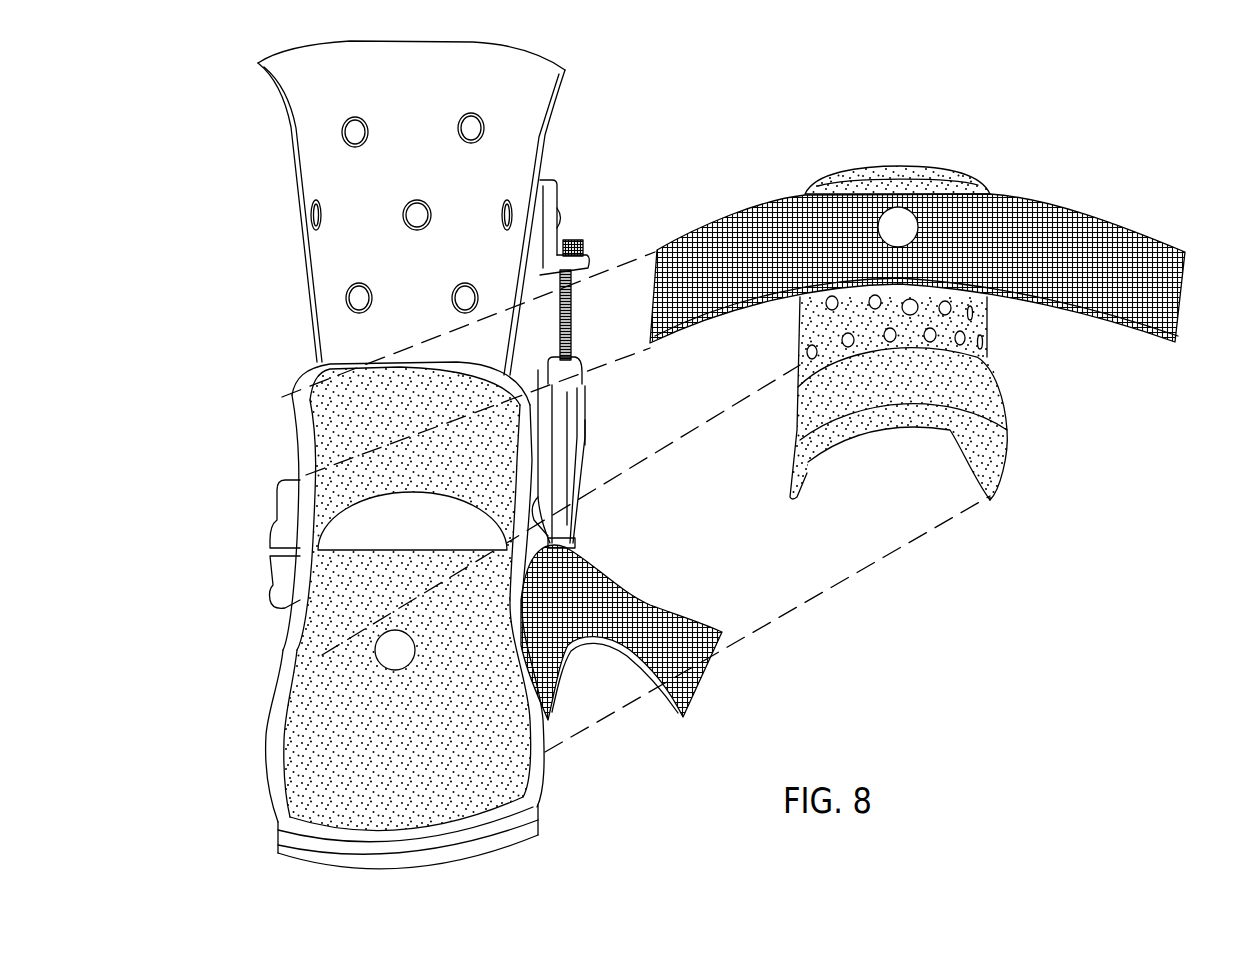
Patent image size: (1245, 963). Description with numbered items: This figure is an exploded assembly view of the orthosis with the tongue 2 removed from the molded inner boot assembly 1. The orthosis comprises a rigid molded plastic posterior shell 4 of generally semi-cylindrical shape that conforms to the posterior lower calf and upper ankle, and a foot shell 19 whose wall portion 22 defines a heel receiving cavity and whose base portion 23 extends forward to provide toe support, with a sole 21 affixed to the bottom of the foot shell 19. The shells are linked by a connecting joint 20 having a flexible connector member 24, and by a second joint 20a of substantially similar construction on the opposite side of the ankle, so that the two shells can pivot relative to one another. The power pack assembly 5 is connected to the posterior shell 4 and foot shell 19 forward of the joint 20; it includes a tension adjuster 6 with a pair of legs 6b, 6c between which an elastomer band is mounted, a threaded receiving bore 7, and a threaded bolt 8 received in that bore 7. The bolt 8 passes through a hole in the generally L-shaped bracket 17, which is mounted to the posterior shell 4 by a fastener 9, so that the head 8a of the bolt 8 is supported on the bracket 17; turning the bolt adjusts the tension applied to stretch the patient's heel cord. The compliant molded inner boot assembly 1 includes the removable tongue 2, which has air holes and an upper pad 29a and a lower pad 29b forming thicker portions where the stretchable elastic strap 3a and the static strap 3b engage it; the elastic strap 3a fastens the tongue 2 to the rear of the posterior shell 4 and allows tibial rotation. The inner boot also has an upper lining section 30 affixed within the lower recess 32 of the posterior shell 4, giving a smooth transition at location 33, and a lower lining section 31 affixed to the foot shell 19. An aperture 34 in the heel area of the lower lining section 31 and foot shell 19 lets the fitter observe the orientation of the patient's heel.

The molded inner boot assembly 1 is at (561, 509).
The tongue 2 is at (980, 320).
The elastic strap 3a is at (1162, 259).
The static strap 3b is at (687, 604).
The posterior shell 4 is at (517, 148).
The power pack assembly 5 is at (588, 431).
The tension adjuster 6 is at (586, 449).
The leg 6b is at (548, 409).
The leg 6c is at (572, 523).
The threaded receiving bore 7 is at (574, 370).
The threaded bolt 8 is at (574, 325).
The head 8a is at (573, 245).
The fastener 9 is at (557, 211).
The bracket 17 is at (542, 232).
The foot shell 19 is at (546, 765).
The connecting joint 20 is at (544, 538).
The second joint 20a is at (268, 528).
The sole 21 is at (527, 835).
The wall portion 22 is at (280, 655).
The base portion 23 is at (328, 843).
The flexible connector member 24 is at (270, 554).
The upper pad 29a is at (923, 183).
The lower pad 29b is at (970, 392).
The upper lining section 30 is at (347, 417).
The lower lining section 31 is at (335, 700).
The lower recess 32 is at (300, 455).
The location 33 is at (427, 365).
The aperture 34 is at (408, 630).